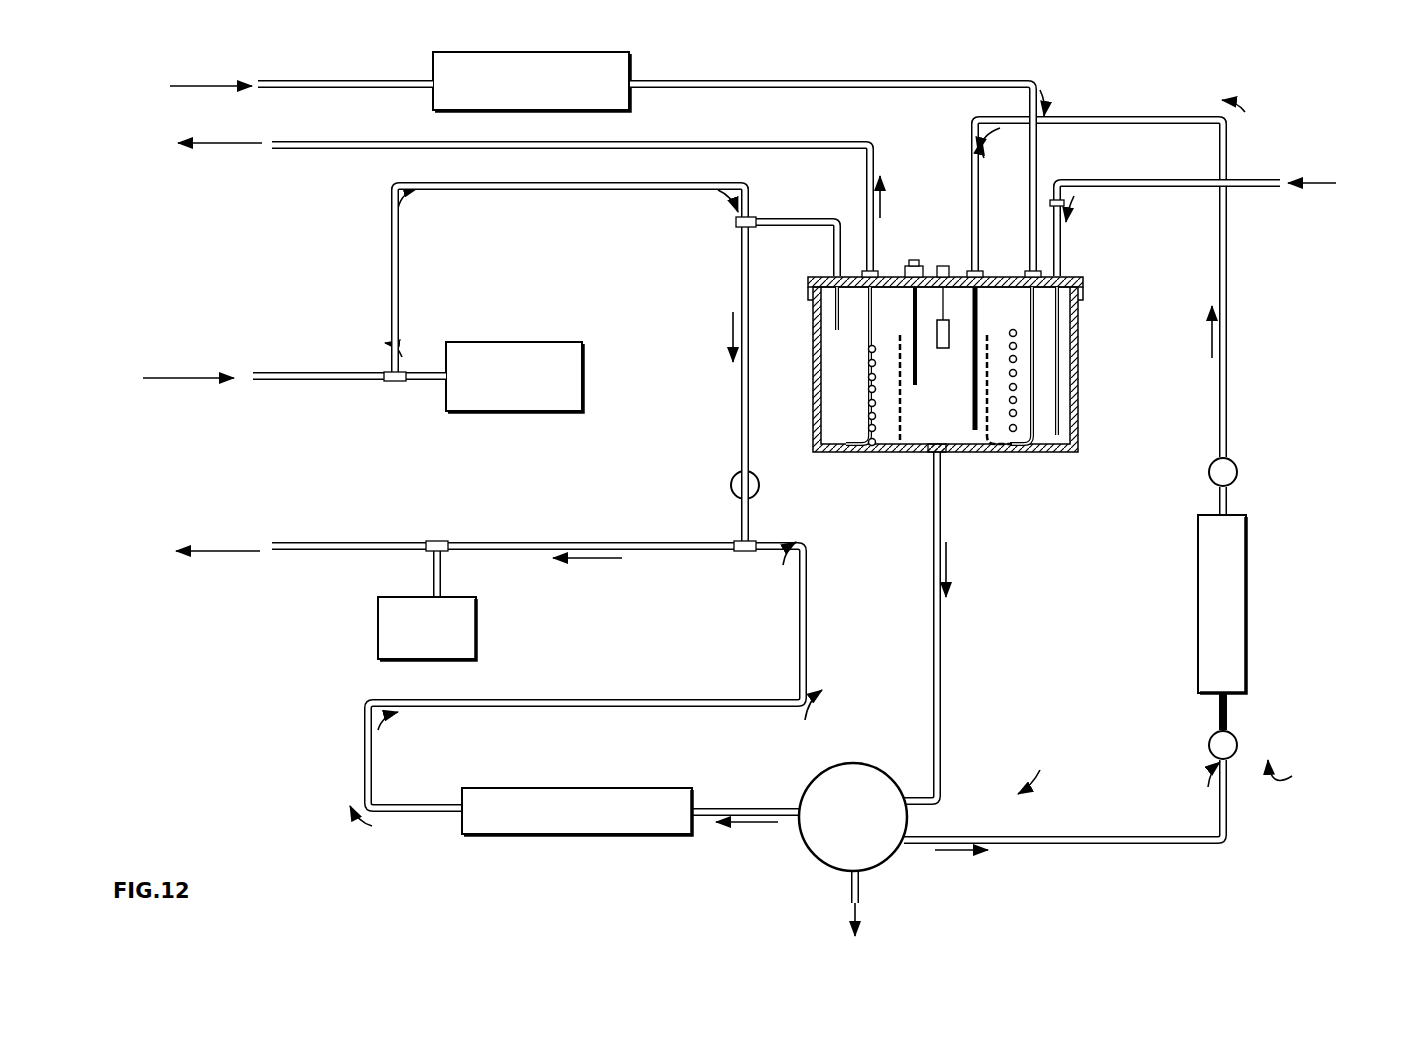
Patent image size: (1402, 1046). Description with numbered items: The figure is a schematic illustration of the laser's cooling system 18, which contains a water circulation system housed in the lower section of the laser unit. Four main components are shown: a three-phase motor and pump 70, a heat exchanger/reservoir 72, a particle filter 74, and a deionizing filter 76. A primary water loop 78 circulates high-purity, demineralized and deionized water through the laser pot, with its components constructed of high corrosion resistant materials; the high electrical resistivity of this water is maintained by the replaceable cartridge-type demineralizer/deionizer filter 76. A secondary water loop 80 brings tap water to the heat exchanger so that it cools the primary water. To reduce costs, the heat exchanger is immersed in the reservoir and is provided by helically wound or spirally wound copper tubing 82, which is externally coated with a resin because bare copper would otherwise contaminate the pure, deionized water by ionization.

The cooling system 18 is at (214, 684).
The three-phase motor and pump 70 is at (823, 800).
The heat exchanger/reservoir 72 is at (838, 457).
The particle filter 74 is at (610, 802).
The deionizing filter 76 is at (1232, 545).
The primary water loop 78 is at (372, 380).
The secondary water loop 80 is at (846, 86).
The helically wound or spirally wound copper tubing 82 is at (868, 365).